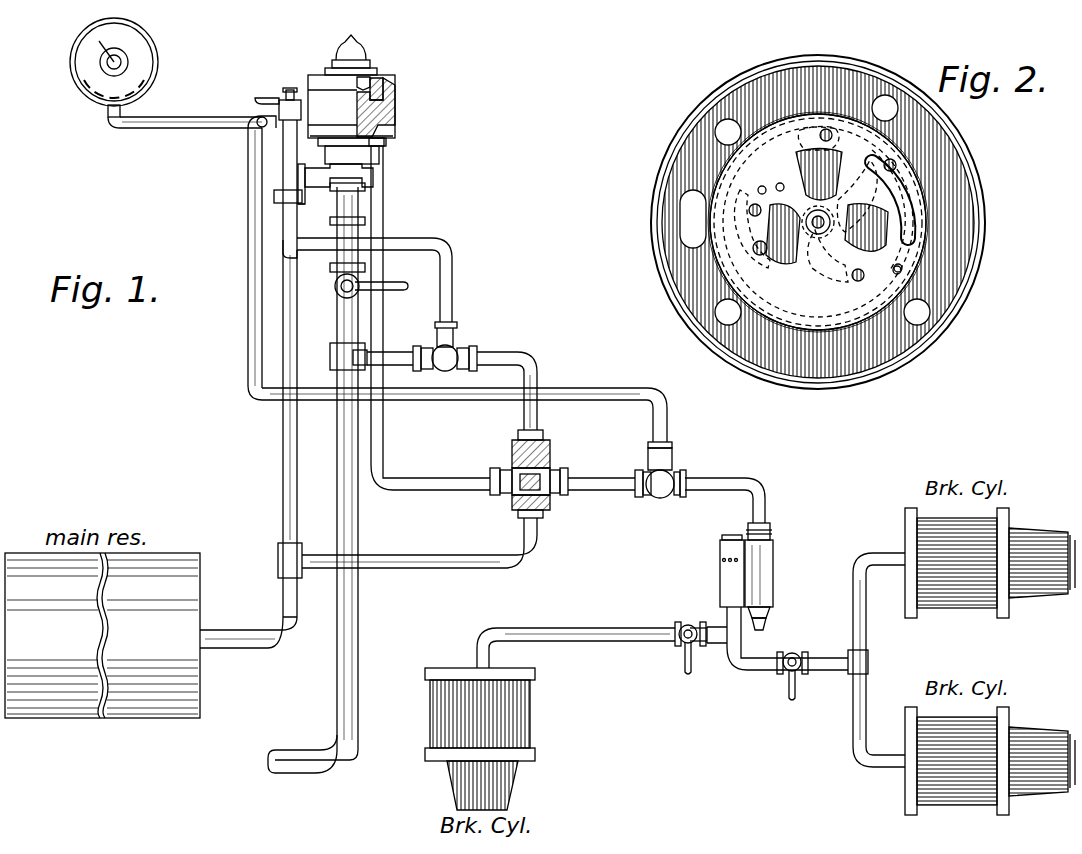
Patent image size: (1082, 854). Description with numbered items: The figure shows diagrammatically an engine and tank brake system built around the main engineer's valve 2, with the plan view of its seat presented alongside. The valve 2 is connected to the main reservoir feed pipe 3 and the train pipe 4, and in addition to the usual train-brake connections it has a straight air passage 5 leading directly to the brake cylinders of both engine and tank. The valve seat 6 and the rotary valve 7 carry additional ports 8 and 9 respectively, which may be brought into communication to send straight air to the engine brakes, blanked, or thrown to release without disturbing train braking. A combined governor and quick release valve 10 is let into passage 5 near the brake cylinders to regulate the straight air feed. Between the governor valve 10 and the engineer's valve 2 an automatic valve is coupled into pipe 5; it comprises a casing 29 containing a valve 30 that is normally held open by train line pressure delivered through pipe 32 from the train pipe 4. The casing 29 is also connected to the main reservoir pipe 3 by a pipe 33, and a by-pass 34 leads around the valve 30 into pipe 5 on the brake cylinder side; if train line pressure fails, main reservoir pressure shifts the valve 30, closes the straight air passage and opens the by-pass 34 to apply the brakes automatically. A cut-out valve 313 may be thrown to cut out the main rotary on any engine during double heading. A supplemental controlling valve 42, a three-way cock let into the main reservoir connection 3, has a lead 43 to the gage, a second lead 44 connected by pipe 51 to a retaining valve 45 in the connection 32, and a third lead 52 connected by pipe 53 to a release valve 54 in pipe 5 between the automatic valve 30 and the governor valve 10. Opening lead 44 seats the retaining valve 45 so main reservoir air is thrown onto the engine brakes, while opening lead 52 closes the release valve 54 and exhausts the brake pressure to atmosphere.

In FIG. 1, the main engineer's valve 2 is at (351, 99).
In FIG. 1, the main reservoir feed pipe 3 is at (292, 307).
In FIG. 1, the train pipe 4 is at (347, 448).
In FIG. 1, the straight air pipe or passage 5 is at (387, 205).
In FIG. 1, the valve seat 6 is at (360, 112).
In FIG. 2, the valve seat 6 is at (820, 312).
In FIG. 1, the valve 7 is at (366, 80).
In FIG. 2, the valve 7 is at (852, 288).
In FIG. 1, the port 8 is at (396, 110).
In FIG. 2, the port 8 is at (912, 232).
In FIG. 1, the port 9 is at (382, 90).
In FIG. 2, the port 9 is at (884, 284).
In FIG. 1, the combined governor and quick release valve 10 is at (770, 552).
In FIG. 1, the casing 29 is at (515, 455).
In FIG. 1, the automatic valve 30 is at (538, 483).
In FIG. 1, the pipe 32 is at (537, 392).
In FIG. 1, the pipe 33 is at (430, 570).
In FIG. 1, the by-pass 34 is at (548, 500).
In FIG. 1, the supplemental controlling valve 42 is at (290, 88).
In FIG. 1, the lead 43 is at (272, 104).
In FIG. 1, the second lead 44 is at (285, 135).
In FIG. 1, the retaining valve 45 is at (458, 348).
In FIG. 1, the pipe 51 is at (408, 242).
In FIG. 1, the third lead 52 is at (262, 128).
In FIG. 1, the pipe 53 is at (249, 233).
In FIG. 1, the release valve 54 is at (678, 472).
In FIG. 1, the cut-out valve 313 is at (400, 290).